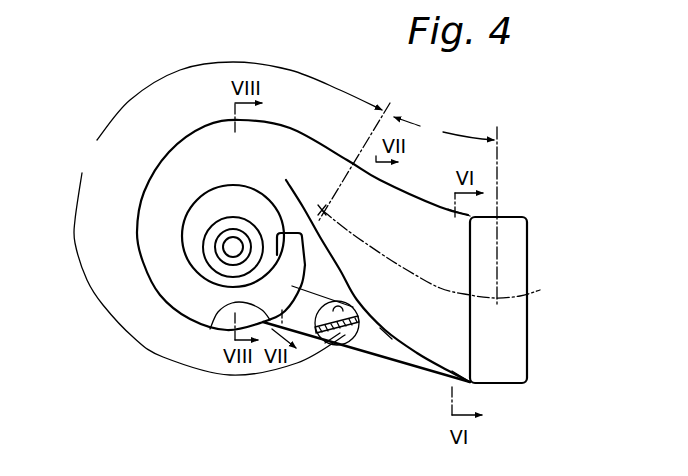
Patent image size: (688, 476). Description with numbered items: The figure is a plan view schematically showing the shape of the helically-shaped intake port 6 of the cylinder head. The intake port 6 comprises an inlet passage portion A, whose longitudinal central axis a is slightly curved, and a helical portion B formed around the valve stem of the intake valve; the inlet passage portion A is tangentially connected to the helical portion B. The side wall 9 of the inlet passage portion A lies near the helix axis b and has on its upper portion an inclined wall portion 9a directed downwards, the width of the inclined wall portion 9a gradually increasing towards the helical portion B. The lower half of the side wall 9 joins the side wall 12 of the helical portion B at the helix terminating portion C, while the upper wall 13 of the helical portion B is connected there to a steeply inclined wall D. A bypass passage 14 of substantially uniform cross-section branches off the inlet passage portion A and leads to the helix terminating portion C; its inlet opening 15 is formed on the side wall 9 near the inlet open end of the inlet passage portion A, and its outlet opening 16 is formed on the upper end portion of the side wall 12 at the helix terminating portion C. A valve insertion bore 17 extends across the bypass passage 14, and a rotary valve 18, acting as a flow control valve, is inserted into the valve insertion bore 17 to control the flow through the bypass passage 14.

The helically-shaped intake port 6 is at (522, 212).
The side wall 9 is at (470, 384).
The inclined wall portion 9a is at (389, 349).
The side wall of the helical portion 12 is at (147, 277).
The upper wall of the helical portion 13 is at (148, 224).
The bypass passage 14 is at (364, 351).
The inlet opening 15 is at (414, 352).
The outlet opening 16 is at (211, 330).
The valve insertion bore 17 is at (353, 307).
The rotary valve 18 is at (338, 346).
The longitudinal central axis a is at (518, 303).
The helix axis b is at (231, 248).
The inlet passage portion A is at (444, 128).
The helical portion B is at (228, 218).
The helix terminating portion C is at (292, 271).
The steeply inclined wall D is at (288, 245).